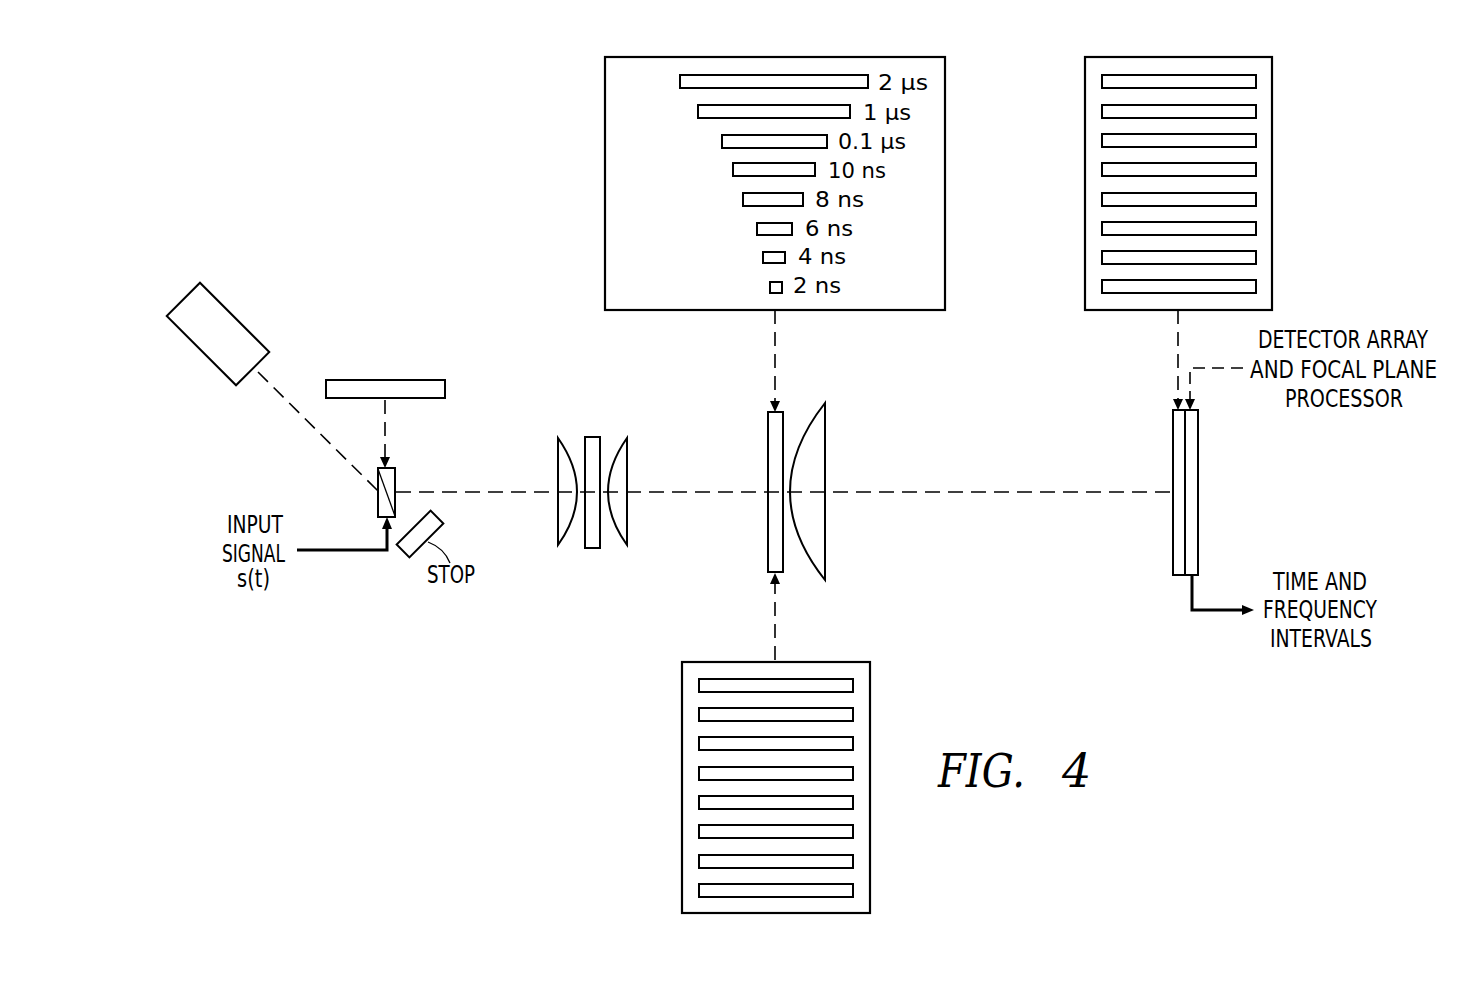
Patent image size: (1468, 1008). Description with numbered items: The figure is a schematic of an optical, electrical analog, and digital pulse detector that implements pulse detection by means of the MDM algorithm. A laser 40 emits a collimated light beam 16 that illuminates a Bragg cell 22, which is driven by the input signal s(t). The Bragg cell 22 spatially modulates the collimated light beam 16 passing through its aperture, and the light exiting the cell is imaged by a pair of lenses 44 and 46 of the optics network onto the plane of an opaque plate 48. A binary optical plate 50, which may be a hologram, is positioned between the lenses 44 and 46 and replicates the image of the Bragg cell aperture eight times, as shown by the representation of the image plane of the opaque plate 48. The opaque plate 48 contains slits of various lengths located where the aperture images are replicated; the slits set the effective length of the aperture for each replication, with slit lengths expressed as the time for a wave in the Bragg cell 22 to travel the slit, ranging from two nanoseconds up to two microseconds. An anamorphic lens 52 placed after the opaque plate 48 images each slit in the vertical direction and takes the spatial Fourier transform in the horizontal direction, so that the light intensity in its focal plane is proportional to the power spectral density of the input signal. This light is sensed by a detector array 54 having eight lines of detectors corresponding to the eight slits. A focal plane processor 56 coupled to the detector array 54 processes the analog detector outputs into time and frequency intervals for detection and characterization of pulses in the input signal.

The collimated light beam 16 is at (303, 415).
The Bragg cell 22 is at (375, 504).
The laser 40 is at (185, 297).
The lens 44 is at (558, 467).
The lens 46 is at (628, 467).
The opaque plate 48 is at (768, 520).
The binary optical plate 50 is at (593, 549).
The anamorphic lens 52 is at (827, 525).
The detector array 54 is at (1178, 532).
The focal plane processor 56 is at (1192, 463).